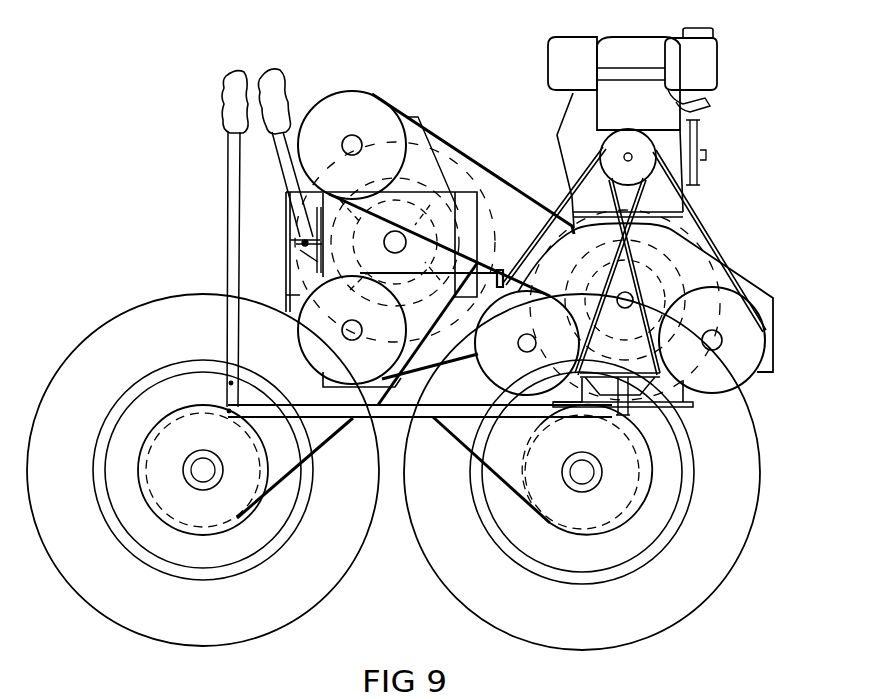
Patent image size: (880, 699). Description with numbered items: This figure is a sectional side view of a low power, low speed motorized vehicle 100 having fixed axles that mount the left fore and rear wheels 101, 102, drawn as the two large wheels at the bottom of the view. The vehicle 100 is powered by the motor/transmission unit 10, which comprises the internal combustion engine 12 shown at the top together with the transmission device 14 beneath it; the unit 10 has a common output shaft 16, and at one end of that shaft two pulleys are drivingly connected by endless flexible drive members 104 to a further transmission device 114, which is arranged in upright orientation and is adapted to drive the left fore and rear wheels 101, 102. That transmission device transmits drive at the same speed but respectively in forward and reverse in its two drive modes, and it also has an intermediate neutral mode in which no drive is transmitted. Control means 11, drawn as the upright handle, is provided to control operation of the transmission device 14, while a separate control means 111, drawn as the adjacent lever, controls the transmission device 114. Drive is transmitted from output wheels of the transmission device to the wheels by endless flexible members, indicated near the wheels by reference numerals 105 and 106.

The motor/transmission unit 10 is at (784, 101).
The control means 11 is at (214, 197).
The internal combustion engine 12 is at (736, 95).
The transmission device 14 is at (722, 210).
The common output shaft 16 is at (632, 297).
The motorized vehicle 100 is at (131, 118).
The left fore wheel 101 is at (752, 437).
The left rear wheel 102 is at (134, 318).
The endless flexible drive members 104 is at (521, 193).
The wheel strut 105 is at (327, 462).
The wheel strut 106 is at (494, 435).
The control means 111 is at (292, 90).
The transmission device 114 is at (467, 138).